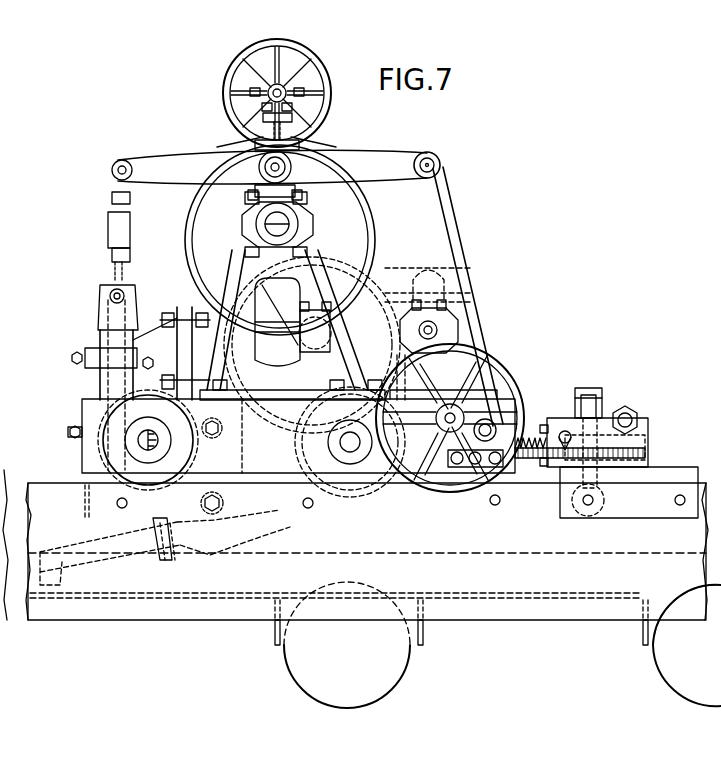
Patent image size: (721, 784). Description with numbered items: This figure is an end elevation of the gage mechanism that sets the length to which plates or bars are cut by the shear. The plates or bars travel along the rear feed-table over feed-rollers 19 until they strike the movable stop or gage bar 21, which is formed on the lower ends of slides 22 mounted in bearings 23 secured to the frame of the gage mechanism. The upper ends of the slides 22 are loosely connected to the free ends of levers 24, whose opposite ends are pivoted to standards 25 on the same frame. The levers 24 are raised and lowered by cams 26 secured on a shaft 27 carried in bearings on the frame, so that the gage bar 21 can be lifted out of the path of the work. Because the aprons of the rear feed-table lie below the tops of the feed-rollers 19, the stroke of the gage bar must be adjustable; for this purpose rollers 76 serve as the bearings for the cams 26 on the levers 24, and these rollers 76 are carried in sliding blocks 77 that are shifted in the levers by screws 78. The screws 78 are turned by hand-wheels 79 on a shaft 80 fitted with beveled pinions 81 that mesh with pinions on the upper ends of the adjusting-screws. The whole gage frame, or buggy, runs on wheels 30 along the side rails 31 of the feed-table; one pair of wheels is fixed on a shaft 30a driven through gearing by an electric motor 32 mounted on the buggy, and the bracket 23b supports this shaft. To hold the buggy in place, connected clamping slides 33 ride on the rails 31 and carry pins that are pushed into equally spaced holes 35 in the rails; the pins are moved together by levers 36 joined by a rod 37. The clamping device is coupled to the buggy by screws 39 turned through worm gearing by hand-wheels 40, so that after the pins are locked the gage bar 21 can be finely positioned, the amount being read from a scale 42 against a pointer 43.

The feed-rollers 19 is at (206, 85).
The gage bar 21 is at (58, 582).
The slides 22 is at (105, 333).
The bearings 23 is at (88, 430).
The bearing bracket 23b is at (185, 353).
The levers 24 is at (372, 150).
The standards 25 is at (462, 212).
The cams 26 is at (318, 226).
The shaft 27 is at (262, 238).
The wheels 30 is at (230, 505).
The shaft 30a is at (251, 377).
The side rails 31 is at (32, 488).
The electric motor 32 is at (446, 304).
The slides 33 is at (648, 450).
The holes 35 is at (496, 506).
The levers 36 is at (598, 410).
The rod 37 is at (586, 388).
The screws 39 is at (525, 492).
The hand-wheels 40 is at (456, 418).
The scale 42 is at (580, 475).
The pointer 43 is at (563, 430).
The rollers 76 is at (292, 170).
The sliding blocks 77 is at (262, 146).
The screws 78 is at (322, 112).
The hand-wheels 79 is at (279, 86).
The shaft 80 is at (268, 84).
The beveled pinions 81 is at (298, 65).